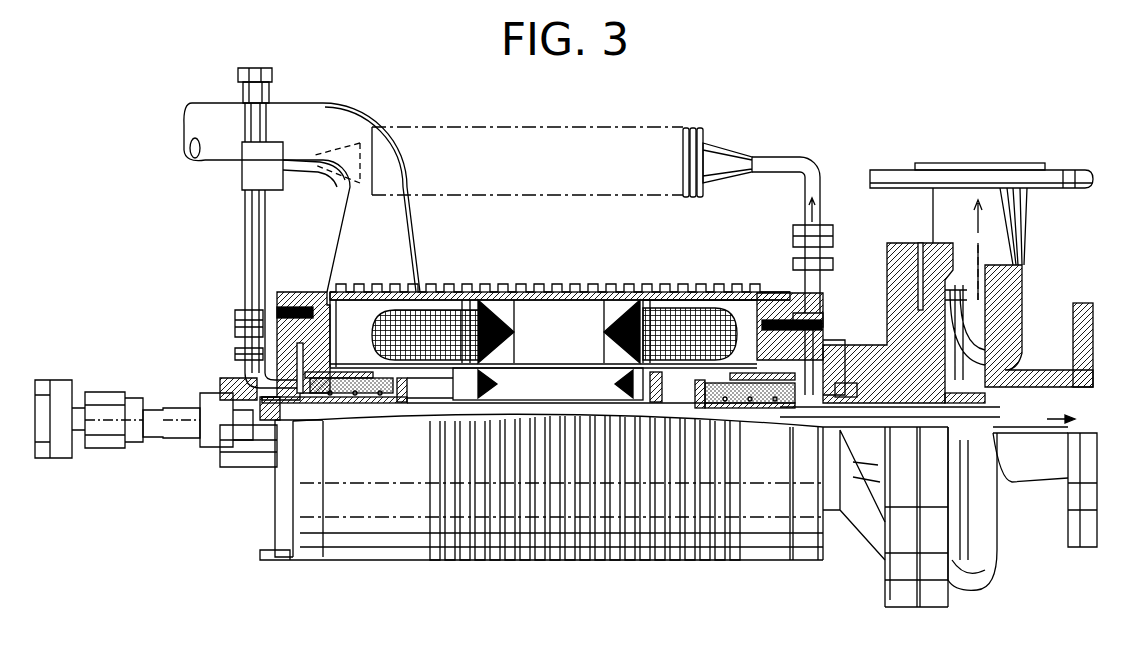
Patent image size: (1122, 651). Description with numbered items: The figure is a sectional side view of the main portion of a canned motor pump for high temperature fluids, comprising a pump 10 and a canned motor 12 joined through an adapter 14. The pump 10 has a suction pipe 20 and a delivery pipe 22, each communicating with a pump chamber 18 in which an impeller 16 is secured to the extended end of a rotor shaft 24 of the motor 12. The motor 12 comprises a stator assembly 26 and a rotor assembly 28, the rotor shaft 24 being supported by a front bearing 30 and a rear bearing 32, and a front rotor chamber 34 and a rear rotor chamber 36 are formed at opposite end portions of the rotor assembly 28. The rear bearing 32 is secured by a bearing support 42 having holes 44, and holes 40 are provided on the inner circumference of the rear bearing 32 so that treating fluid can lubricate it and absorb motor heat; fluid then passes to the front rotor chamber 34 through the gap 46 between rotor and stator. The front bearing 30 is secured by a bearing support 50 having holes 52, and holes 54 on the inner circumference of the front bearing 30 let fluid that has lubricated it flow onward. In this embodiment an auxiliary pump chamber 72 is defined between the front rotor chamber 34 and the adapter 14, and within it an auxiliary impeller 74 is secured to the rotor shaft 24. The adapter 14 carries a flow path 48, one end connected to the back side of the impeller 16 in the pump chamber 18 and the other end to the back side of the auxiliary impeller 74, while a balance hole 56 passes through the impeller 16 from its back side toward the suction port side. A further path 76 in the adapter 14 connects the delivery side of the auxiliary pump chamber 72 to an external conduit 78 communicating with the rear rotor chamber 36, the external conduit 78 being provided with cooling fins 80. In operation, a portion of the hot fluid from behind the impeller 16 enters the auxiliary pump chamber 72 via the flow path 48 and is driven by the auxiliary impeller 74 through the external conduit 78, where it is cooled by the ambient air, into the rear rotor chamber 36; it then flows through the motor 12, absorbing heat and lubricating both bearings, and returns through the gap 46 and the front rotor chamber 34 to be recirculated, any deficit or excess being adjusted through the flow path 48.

The pump 10 is at (988, 280).
The canned motor 12 is at (367, 540).
The adapter 14 is at (903, 250).
The impeller 16 is at (1024, 280).
The pump chamber 18 is at (967, 343).
The suction pipe 20 is at (1041, 385).
The delivery pipe 22 is at (1003, 177).
The rotor shaft 24 is at (575, 413).
The stator assembly 26 is at (518, 310).
The rotor assembly 28 is at (587, 378).
The front bearing 30 is at (725, 385).
The rear bearing 32 is at (383, 388).
The front rotor chamber 34 is at (683, 368).
The rear rotor chamber 36 is at (433, 377).
The holes 40 is at (347, 395).
The bearing support 42 is at (290, 347).
The holes 44 is at (293, 383).
The gap 46 is at (545, 363).
The flow path 48 is at (873, 480).
The bearing support 50 is at (748, 300).
The holes 52 is at (767, 300).
The holes 54 is at (753, 413).
The balance hole 56 is at (993, 427).
The auxiliary pump chamber 72 is at (837, 333).
The auxiliary impeller 74 is at (850, 400).
The path 76 is at (828, 305).
The external conduit 78 is at (728, 157).
The cooling fins 80 is at (706, 140).